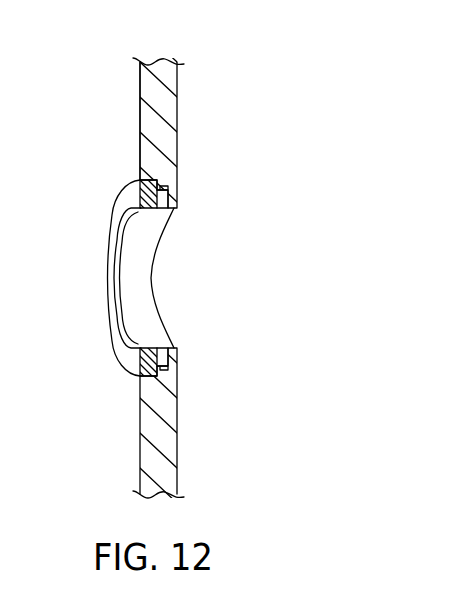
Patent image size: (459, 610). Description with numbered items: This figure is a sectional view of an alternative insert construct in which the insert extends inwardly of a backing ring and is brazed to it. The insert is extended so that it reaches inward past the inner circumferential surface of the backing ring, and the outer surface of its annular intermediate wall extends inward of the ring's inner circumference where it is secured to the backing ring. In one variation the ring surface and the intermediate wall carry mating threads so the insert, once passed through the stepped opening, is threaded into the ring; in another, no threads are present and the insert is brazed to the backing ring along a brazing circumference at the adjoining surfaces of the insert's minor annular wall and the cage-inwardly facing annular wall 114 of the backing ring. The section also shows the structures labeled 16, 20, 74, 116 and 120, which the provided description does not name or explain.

The wall 16 is at (169, 105).
The wall surface 20 is at (132, 110).
The retainer 74 is at (160, 187).
The cage-inwardly facing annular wall 114 is at (109, 189).
The seal layer 116 is at (109, 337).
The retainer 120 is at (169, 354).